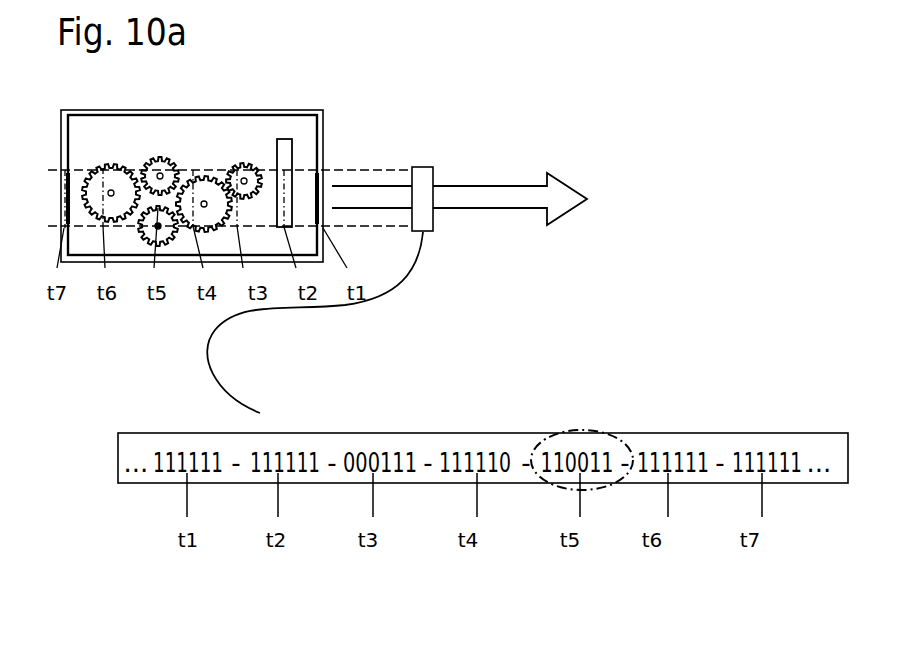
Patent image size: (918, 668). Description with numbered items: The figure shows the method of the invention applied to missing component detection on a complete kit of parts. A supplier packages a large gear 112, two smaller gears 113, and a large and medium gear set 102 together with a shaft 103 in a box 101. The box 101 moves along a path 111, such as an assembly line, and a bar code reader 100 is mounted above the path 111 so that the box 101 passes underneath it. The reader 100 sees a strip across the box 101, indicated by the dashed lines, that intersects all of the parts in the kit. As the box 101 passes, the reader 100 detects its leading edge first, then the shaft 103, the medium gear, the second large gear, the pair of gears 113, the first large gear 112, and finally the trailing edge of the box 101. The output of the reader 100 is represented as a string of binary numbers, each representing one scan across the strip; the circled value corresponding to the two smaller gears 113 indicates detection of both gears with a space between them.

The bar code reader 100 is at (423, 178).
The box 101 is at (323, 147).
The large and medium gear set 102 is at (208, 187).
The shaft 103 is at (290, 140).
The path 111 is at (482, 199).
The large gear 112 is at (111, 170).
The smaller gears 113 is at (166, 195).